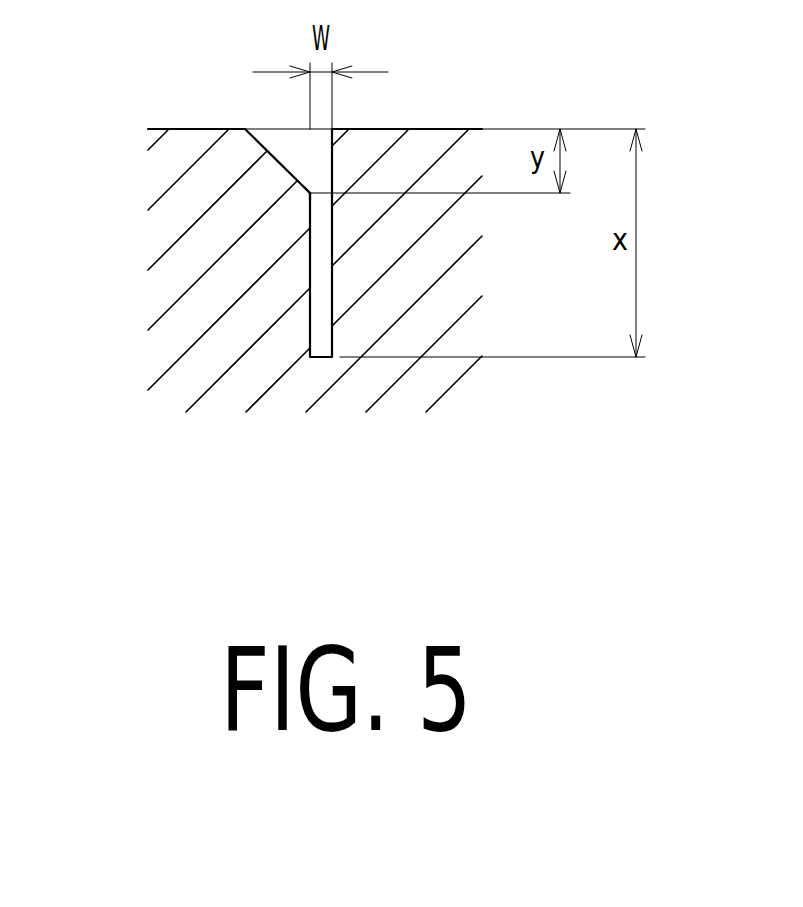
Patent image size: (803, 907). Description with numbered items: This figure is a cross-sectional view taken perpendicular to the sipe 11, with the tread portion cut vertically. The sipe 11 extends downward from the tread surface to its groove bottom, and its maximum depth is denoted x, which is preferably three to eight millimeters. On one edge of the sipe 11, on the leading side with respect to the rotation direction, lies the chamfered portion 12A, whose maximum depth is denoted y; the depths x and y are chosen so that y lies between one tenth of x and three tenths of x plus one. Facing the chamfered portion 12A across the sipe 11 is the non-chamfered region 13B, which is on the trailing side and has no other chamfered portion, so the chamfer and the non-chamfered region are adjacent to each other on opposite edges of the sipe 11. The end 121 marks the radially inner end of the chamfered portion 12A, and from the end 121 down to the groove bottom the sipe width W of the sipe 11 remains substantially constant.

The sipe 11 is at (320, 342).
The chamfered portion 12A is at (268, 150).
The non-chamfered region 13B is at (423, 152).
The end of the chamfered portion 121 is at (310, 193).